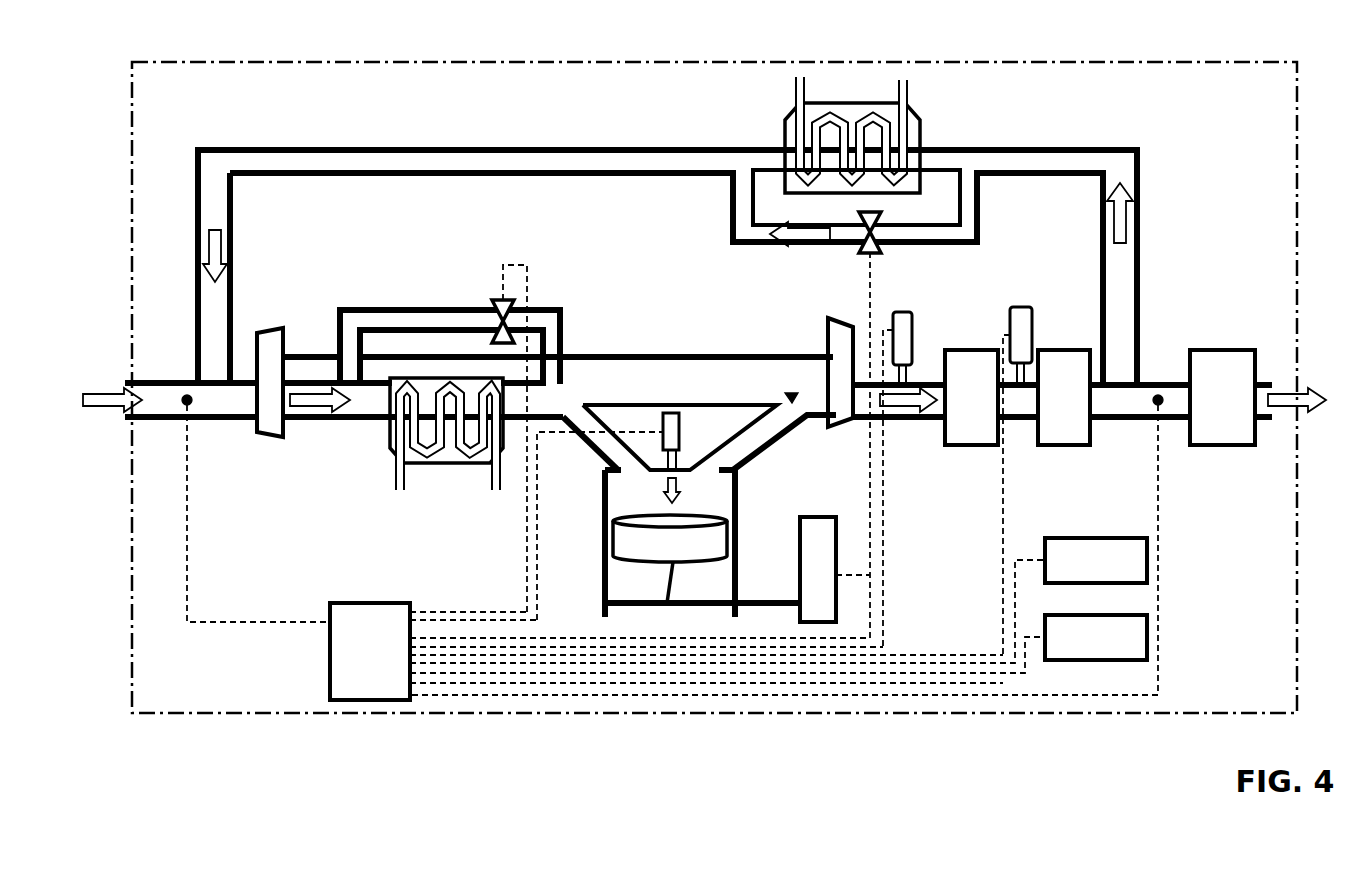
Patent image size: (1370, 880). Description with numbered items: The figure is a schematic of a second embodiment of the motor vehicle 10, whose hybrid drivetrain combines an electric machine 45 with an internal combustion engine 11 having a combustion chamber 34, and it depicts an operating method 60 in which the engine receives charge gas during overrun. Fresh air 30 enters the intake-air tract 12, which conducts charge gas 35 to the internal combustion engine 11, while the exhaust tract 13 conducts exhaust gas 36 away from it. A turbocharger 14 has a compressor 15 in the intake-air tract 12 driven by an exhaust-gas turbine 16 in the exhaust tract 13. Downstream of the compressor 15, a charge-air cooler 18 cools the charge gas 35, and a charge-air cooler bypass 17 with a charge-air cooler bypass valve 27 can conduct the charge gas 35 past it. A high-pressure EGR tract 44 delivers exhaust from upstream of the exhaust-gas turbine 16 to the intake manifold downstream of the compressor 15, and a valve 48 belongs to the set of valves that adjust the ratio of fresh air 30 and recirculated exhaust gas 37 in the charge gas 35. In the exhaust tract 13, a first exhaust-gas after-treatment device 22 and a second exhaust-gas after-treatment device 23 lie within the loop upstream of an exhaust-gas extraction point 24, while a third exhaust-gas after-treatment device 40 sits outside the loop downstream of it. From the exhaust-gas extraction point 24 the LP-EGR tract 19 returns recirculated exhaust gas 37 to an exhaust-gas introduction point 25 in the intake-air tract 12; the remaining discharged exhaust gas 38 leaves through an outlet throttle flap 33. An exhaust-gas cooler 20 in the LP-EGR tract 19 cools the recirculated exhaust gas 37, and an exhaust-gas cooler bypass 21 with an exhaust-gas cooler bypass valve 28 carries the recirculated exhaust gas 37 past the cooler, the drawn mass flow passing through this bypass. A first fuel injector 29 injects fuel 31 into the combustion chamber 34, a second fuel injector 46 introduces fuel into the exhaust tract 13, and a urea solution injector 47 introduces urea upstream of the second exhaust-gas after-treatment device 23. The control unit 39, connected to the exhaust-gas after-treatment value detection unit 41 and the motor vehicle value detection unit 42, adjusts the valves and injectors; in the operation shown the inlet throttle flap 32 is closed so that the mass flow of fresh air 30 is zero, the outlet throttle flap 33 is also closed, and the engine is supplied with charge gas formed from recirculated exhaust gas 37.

The motor vehicle 10 is at (233, 114).
The internal combustion engine 11 is at (737, 560).
The intake-air tract 12 is at (183, 422).
The exhaust tract 13 is at (906, 422).
The turbocharger 14 is at (716, 350).
The compressor 15 is at (272, 440).
The exhaust-gas turbine 16 is at (840, 432).
The charge-air cooler bypass 17 is at (372, 307).
The charge-air cooler 18 is at (440, 478).
The LP-EGR tract 19 is at (455, 148).
The exhaust-gas cooler 20 is at (922, 133).
The exhaust-gas cooler bypass 21 is at (730, 226).
The first exhaust-gas after-treatment device 22 is at (957, 398).
The second exhaust-gas after-treatment device 23 is at (1050, 398).
The exhaust-gas extraction point 24 is at (1123, 375).
The exhaust-gas introduction point 25 is at (238, 378).
The charge-air cooler bypass valve 27 is at (500, 298).
The exhaust-gas cooler bypass valve 28 is at (878, 252).
The first fuel injector 29 is at (681, 424).
The fresh air 30 is at (120, 418).
The fuel 31 is at (684, 490).
The inlet throttle flap 32 is at (185, 394).
The outlet throttle flap 33 is at (1153, 407).
The combustion chamber 34 is at (618, 507).
The charge gas 35 is at (320, 425).
The exhaust gas 36 is at (931, 384).
The recirculated exhaust gas 37 is at (226, 256).
The discharged exhaust gas 38 is at (1284, 418).
The control unit 39 is at (356, 648).
The third exhaust-gas after-treatment device 40 is at (1208, 398).
The exhaust-gas after-treatment value detection unit 41 is at (1082, 575).
The motor vehicle value detection unit 42 is at (1082, 652).
The HP-EGR tract 44 is at (612, 390).
The electric machine 45 is at (838, 577).
The second fuel injector 46 is at (915, 334).
The urea solution injector 47 is at (1028, 306).
The valve 48 is at (786, 394).
The operating method 60 is at (1180, 156).